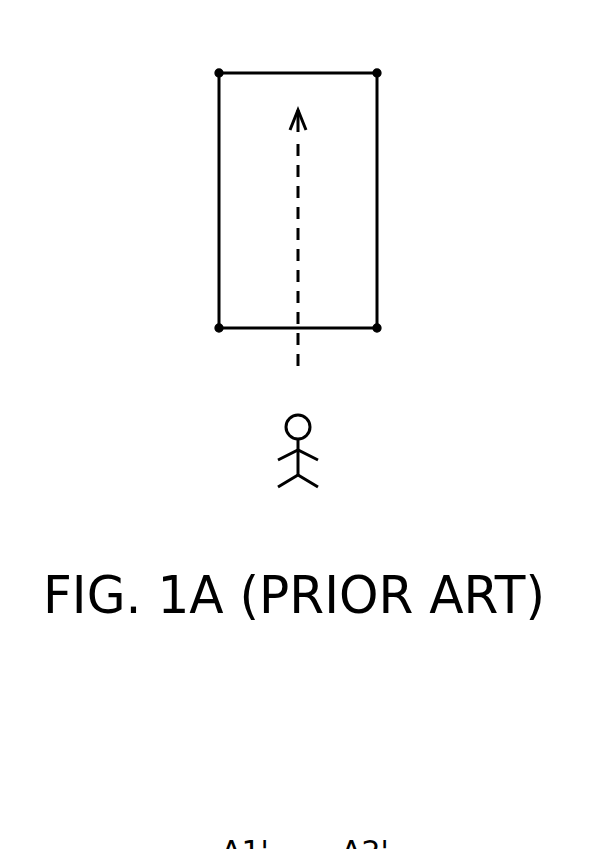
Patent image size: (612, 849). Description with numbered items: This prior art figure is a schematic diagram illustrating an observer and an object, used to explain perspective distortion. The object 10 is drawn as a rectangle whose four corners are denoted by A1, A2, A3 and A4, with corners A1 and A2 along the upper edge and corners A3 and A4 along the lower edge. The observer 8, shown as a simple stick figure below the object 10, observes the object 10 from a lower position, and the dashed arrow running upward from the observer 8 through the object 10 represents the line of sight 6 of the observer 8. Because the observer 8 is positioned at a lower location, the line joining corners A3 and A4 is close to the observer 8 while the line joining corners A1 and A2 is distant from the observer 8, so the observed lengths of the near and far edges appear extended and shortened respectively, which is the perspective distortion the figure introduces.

The object 10 is at (287, 72).
The corner of the object A1 is at (216, 54).
The corner of the object A2 is at (376, 54).
The corner of the object A3 is at (216, 348).
The corner of the object A4 is at (376, 348).
The line of sight 6 is at (299, 357).
The observer 8 is at (310, 427).